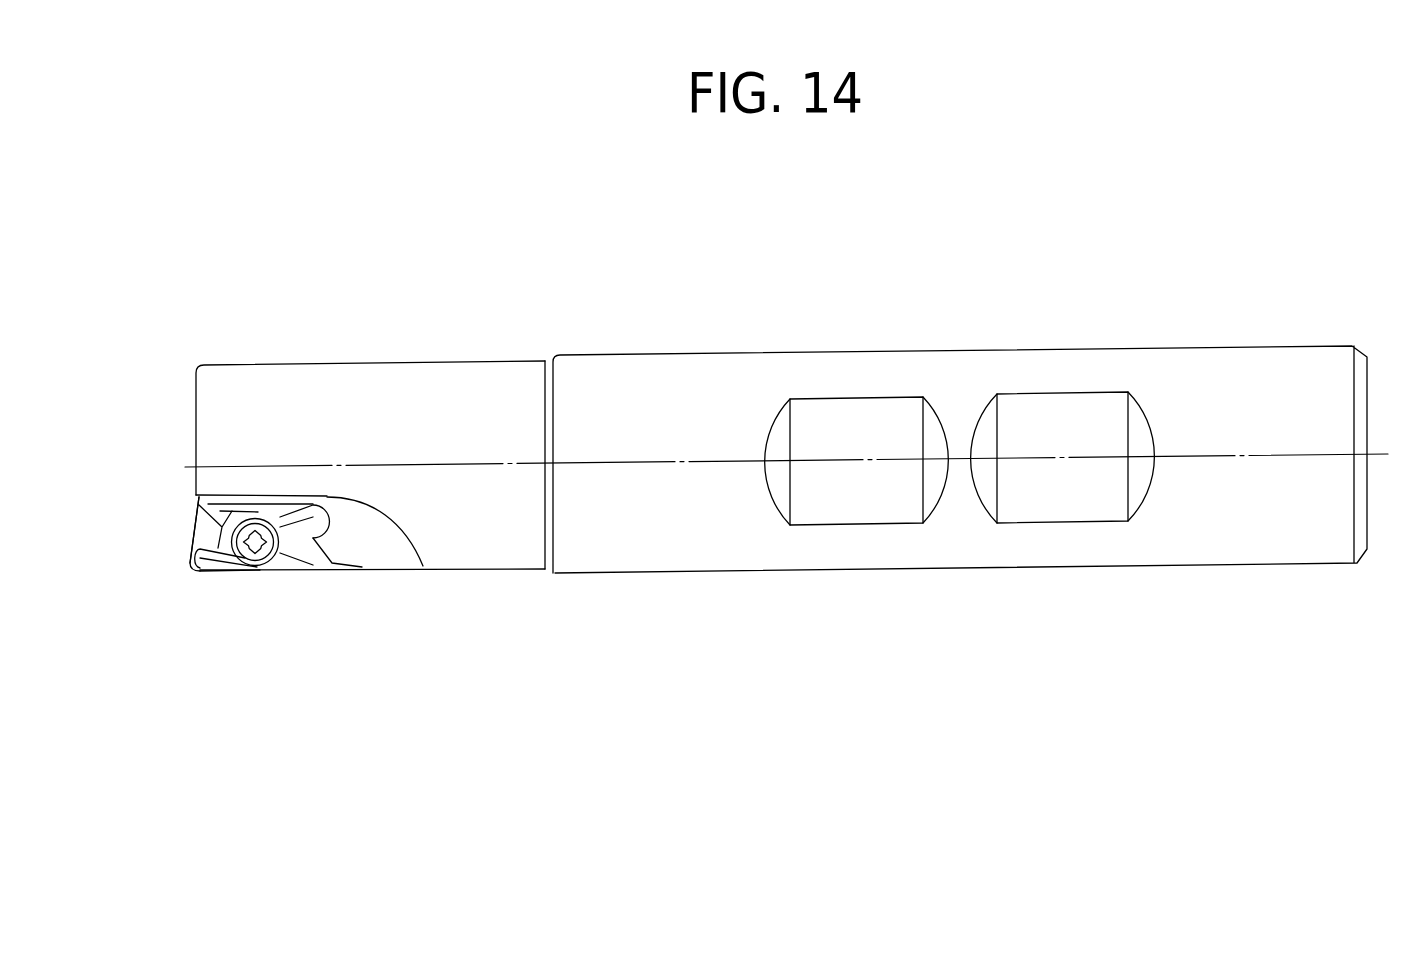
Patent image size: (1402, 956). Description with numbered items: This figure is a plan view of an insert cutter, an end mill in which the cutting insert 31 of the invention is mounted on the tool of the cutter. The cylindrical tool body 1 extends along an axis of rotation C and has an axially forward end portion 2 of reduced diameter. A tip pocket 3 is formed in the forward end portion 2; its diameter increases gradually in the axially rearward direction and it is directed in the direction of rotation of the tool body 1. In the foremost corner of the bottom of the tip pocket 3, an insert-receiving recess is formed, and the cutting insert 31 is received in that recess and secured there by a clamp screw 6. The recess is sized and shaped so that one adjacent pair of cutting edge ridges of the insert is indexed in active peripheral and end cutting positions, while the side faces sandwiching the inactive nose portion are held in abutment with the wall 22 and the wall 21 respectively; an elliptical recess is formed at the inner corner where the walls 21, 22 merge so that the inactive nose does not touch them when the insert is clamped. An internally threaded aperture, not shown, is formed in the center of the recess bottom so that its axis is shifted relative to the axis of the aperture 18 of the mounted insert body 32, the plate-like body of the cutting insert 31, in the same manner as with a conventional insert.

The tool body 1 is at (655, 378).
The forward end portion 2 is at (409, 336).
The tip pocket 3 is at (383, 533).
The clamp screw 6 is at (272, 526).
The aperture 18 is at (257, 518).
The wall 21 is at (337, 567).
The wall 22 is at (303, 500).
The cutting insert 31 is at (232, 598).
The insert body 32 is at (200, 533).
The axis of rotation C is at (1252, 455).